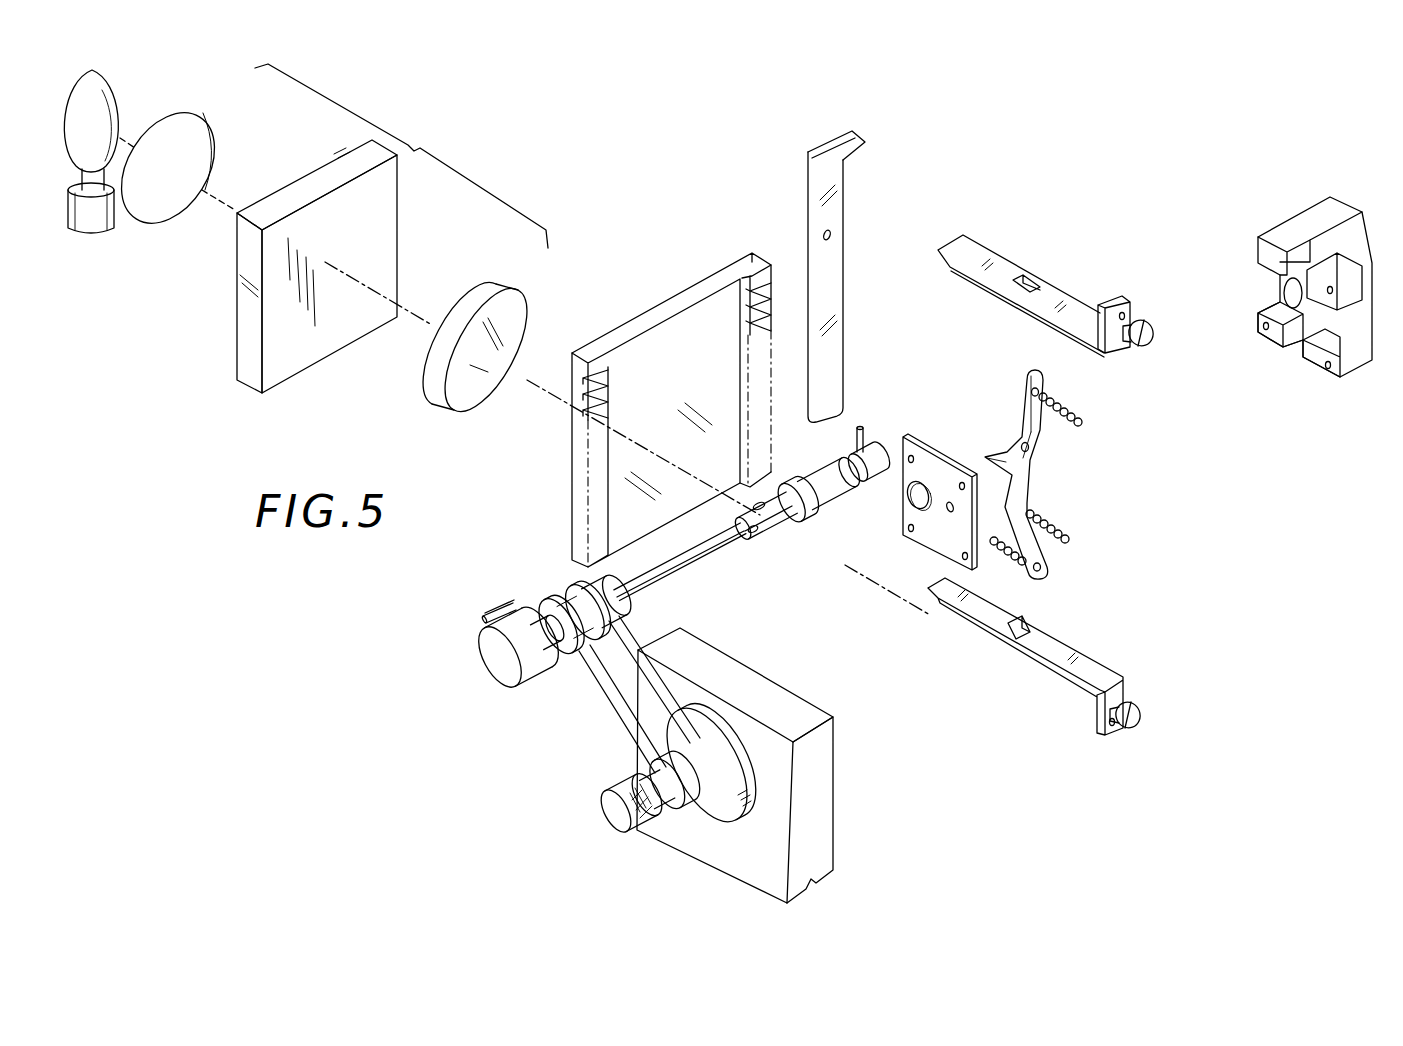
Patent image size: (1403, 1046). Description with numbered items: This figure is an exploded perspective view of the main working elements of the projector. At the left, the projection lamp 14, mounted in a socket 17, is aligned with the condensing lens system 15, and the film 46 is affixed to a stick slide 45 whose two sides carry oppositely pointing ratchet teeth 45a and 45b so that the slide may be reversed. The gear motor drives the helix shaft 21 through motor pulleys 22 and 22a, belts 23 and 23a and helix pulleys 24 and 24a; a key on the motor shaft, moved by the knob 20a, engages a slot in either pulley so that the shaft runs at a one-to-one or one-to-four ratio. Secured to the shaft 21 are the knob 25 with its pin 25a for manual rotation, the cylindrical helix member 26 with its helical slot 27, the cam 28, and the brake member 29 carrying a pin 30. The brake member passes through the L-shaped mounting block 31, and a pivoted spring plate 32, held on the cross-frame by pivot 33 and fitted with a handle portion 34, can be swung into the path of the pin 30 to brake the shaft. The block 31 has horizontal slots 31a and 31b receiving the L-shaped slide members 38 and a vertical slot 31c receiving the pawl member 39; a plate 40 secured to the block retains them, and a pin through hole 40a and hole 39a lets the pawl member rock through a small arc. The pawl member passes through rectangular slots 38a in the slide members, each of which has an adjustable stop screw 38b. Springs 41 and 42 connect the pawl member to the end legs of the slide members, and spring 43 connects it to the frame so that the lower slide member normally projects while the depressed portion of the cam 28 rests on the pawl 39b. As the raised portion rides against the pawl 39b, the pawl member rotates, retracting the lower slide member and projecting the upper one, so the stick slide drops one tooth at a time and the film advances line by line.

The projection lamp 14 is at (102, 106).
The condensing lens system 15 is at (392, 228).
The socket 17 is at (92, 236).
The knob 20a is at (604, 812).
The helix shaft 21 is at (555, 665).
The motor pulley 22 is at (665, 808).
The motor pulley 22a is at (712, 818).
The belt 23 is at (620, 707).
The belt 23a is at (640, 660).
The helix pulley 24 is at (552, 605).
The helix pulley 24a is at (608, 572).
The knob 25 is at (498, 680).
The pin 25a is at (484, 622).
The cylindrical helix member 26 is at (690, 565).
The helical slot 27 is at (757, 533).
The cam 28 is at (812, 500).
The brake member 29 is at (828, 470).
The pin 30 is at (866, 432).
The L-shaped mounting block 31 is at (1312, 215).
The horizontal slot 31a is at (1352, 295).
The horizontal slot 31b is at (1320, 352).
The vertical slot 31c is at (1260, 325).
The pivoted spring plate 32 is at (835, 345).
The pivot 33 is at (835, 230).
The handle portion 34 is at (848, 138).
The L-shaped slide member 38 is at (980, 257).
The rectangular slot 38a is at (1038, 287).
The screw 38b is at (1146, 347).
The pawl member 39 is at (1023, 487).
The hole 39a is at (1032, 446).
The pawl 39b is at (1007, 450).
The plate 40 is at (920, 535).
The hole 40a is at (950, 513).
The spring 41 is at (1083, 422).
The spring 42 is at (1060, 525).
The spring 43 is at (1018, 558).
The stick slide 45 is at (674, 307).
The ratchet teeth 45a is at (748, 310).
The ratchet teeth 45b is at (610, 388).
The film 46 is at (618, 452).